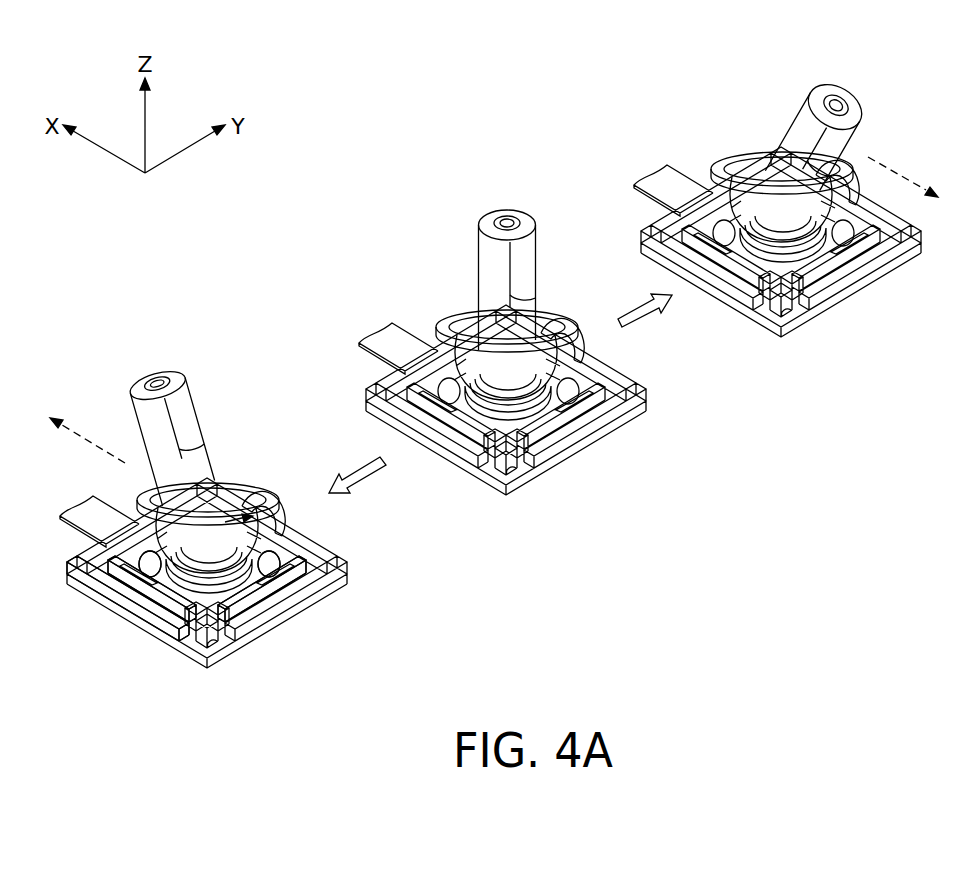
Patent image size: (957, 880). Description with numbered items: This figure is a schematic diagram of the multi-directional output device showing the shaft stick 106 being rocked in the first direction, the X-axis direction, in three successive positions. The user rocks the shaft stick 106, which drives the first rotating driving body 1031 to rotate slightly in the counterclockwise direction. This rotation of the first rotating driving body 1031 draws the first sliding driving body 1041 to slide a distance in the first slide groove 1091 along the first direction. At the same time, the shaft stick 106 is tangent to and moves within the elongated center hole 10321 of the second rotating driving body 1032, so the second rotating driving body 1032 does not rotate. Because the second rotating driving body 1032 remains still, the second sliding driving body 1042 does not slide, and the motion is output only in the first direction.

The shaft stick 106 is at (170, 372).
The first rotating driving body 1031 is at (147, 560).
The elongated center hole 10321 is at (255, 520).
The second rotating driving body 1032 is at (268, 574).
The first slide groove 1091 is at (100, 566).
The first sliding driving body 1041 is at (153, 598).
The second sliding driving body 1042 is at (260, 598).